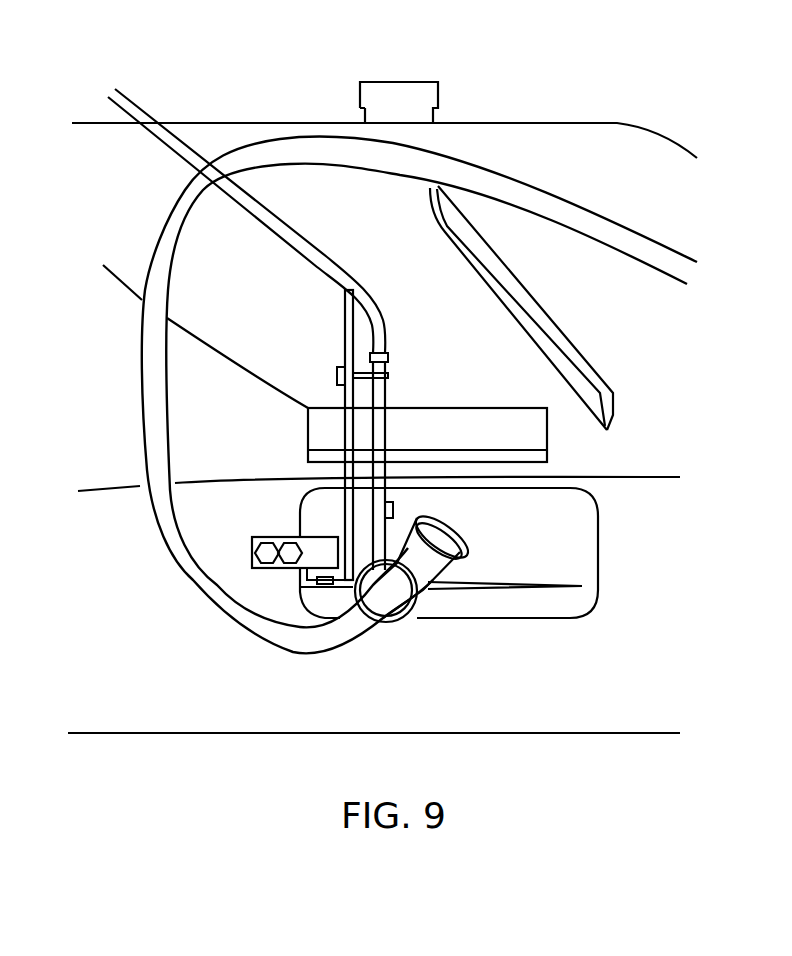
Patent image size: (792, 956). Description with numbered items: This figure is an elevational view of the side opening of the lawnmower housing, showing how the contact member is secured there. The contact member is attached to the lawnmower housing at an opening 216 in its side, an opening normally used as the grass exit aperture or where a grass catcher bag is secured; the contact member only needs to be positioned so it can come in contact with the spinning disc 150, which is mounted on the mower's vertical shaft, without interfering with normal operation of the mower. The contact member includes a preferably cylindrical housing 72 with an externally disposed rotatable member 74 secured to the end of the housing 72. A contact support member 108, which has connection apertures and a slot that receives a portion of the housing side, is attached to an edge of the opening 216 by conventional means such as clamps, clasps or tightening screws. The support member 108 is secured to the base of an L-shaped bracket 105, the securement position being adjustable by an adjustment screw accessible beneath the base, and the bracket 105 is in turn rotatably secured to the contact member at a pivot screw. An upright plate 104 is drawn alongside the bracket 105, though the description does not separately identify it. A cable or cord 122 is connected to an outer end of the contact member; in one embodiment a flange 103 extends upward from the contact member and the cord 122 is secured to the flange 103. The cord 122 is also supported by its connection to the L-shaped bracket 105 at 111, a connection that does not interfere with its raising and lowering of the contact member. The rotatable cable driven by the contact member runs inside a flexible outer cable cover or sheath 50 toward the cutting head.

The flexible outer cable cover or sheath 50 is at (148, 348).
The cable or cord 122 is at (334, 256).
The connection of cord to L-shaped bracket 111 is at (389, 375).
The flange 103 is at (380, 530).
The mounting plate 104 is at (343, 295).
The L-shaped bracket 105 is at (347, 425).
The opening 216 is at (592, 563).
The rotating disc 150 is at (528, 572).
The contact support member 108 is at (296, 541).
The rotatable portion/member 74 is at (459, 538).
The housing 72 is at (427, 592).